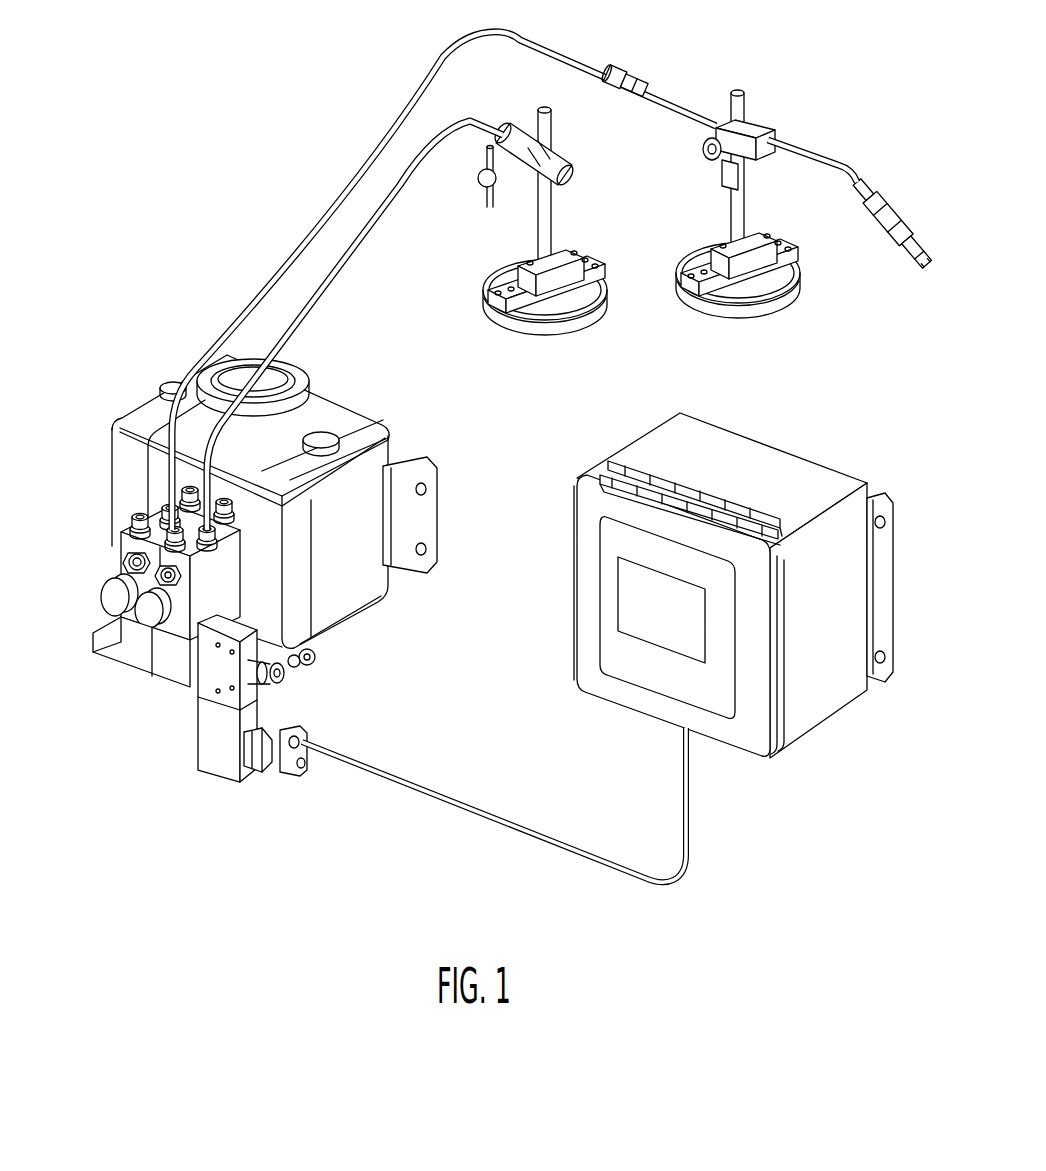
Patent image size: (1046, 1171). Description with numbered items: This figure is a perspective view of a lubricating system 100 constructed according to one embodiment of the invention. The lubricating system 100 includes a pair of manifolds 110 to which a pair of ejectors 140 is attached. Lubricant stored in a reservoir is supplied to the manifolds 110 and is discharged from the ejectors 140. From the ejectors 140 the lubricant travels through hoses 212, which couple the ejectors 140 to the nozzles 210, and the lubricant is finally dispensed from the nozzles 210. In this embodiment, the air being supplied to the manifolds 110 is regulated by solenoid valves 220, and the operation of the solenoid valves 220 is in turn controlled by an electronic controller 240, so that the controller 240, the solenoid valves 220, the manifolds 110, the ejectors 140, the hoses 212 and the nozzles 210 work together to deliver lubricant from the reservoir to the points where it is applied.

The lubricating system 100 is at (278, 44).
The manifolds 110 is at (140, 668).
The ejectors 140 is at (118, 552).
The nozzles 210 is at (391, 428).
The hoses 212 is at (490, 40).
The solenoid valves 220 is at (200, 738).
The electronic controller 240 is at (771, 762).